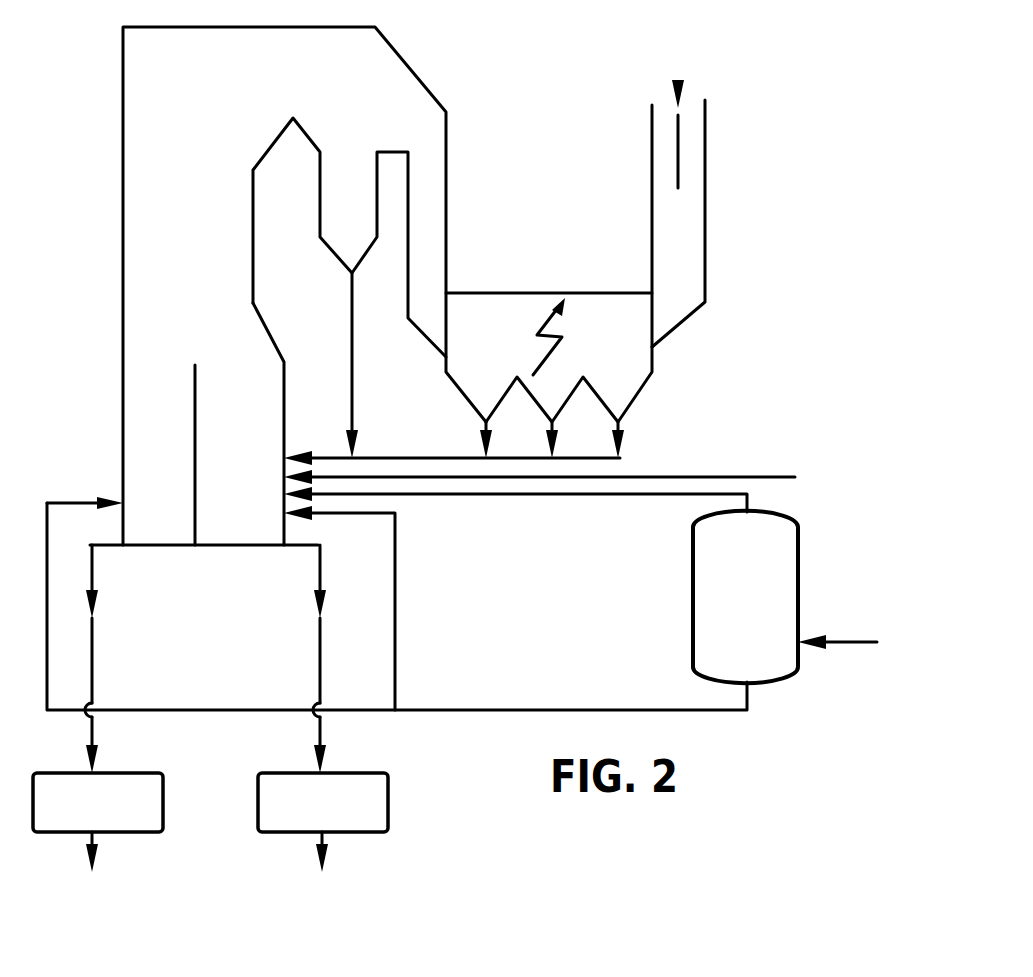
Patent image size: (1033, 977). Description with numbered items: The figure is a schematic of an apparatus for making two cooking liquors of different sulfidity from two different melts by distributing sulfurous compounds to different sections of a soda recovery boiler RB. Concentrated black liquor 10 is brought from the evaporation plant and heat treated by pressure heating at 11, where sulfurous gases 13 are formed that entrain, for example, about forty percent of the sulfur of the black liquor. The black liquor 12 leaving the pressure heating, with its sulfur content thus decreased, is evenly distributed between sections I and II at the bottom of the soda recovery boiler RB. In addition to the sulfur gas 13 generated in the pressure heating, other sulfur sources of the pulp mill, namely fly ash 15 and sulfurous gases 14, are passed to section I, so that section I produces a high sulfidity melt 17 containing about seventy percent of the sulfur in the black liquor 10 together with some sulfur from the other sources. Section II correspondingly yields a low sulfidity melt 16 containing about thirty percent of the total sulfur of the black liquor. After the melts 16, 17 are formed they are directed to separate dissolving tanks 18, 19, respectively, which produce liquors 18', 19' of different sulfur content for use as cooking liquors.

The soda recovery boiler RB is at (108, 420).
The concentrated black liquor 10 is at (846, 641).
The pressure heating 11 is at (790, 545).
The black liquor 12 is at (548, 708).
The sulfurous gases 13 is at (668, 496).
The sulfurous gases 14 is at (745, 476).
The fly ash 15 is at (337, 456).
The low sulfidity melt 16 is at (94, 565).
The high sulfidity melt 17 is at (322, 570).
The dissolving tank 18 is at (116, 802).
The liquor 18' is at (122, 852).
The dissolving tank 19 is at (341, 802).
The liquor 19' is at (351, 852).